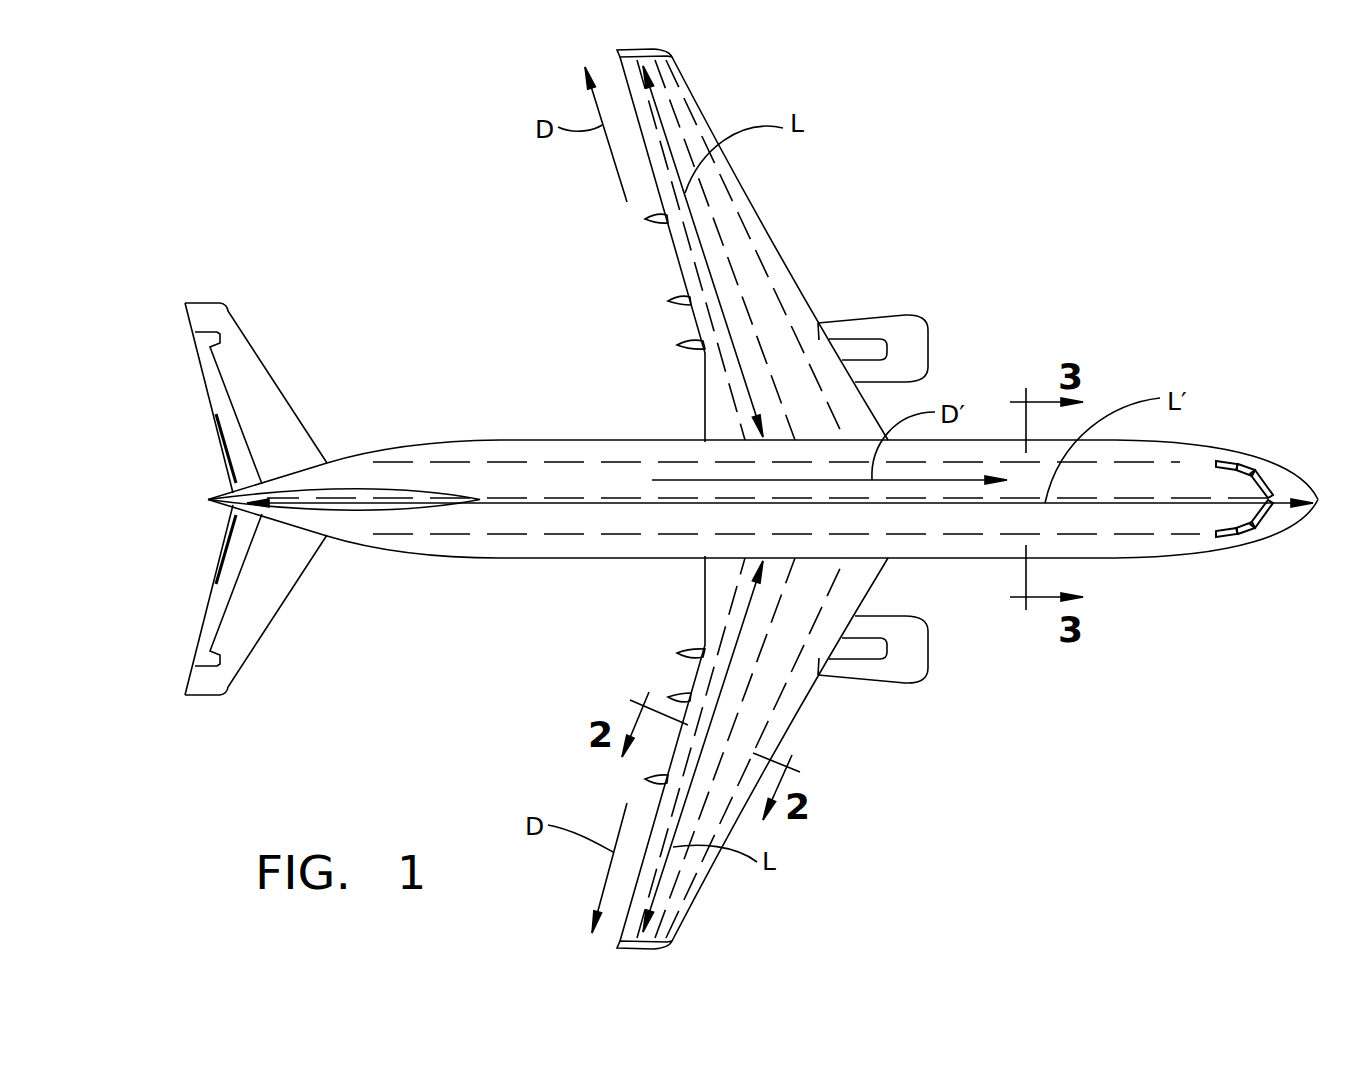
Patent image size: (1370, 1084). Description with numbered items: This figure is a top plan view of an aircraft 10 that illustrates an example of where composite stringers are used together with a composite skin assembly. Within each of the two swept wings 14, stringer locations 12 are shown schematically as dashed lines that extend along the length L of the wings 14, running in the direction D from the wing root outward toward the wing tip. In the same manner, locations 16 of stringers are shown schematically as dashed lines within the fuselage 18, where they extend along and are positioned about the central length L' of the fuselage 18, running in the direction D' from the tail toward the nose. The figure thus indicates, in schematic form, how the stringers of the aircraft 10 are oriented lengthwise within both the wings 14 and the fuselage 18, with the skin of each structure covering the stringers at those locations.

The aircraft 10 is at (1040, 172).
The stringer locations 12 is at (730, 270).
The wings 14 is at (780, 337).
The locations of stringers 16 is at (953, 462).
The fuselage 18 is at (583, 492).